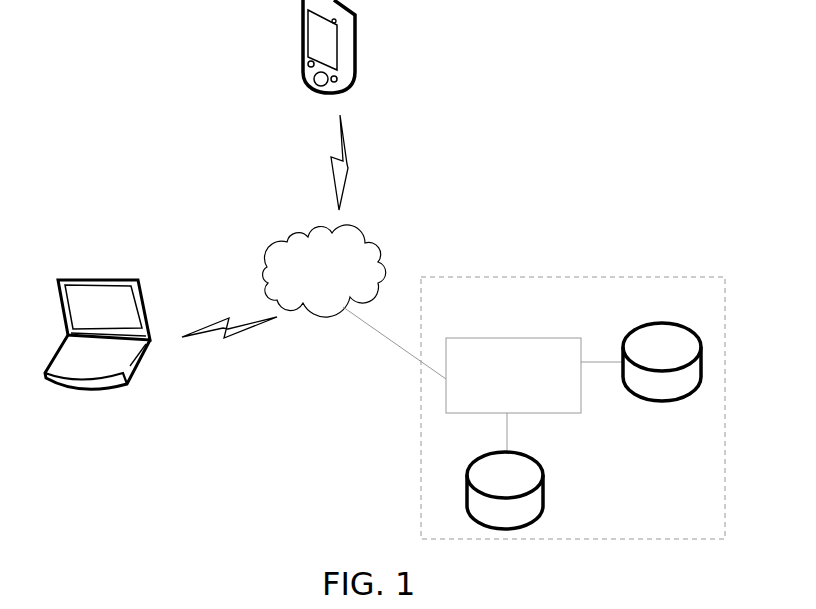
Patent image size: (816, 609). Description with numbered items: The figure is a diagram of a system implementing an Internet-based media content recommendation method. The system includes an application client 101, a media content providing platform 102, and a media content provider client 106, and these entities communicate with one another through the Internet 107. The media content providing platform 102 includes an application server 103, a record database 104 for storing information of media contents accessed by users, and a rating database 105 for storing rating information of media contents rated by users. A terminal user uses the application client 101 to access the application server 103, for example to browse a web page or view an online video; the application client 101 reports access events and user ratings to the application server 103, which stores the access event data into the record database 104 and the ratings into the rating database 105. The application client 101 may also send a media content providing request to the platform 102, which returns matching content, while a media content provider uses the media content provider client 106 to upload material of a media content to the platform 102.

The application client 101 is at (357, 58).
The media content providing platform 102 is at (557, 277).
The application server 103 is at (513, 361).
The record database 104 is at (662, 351).
The rating database 105 is at (529, 490).
The media content provider client 106 is at (113, 334).
The Internet 107 is at (305, 235).